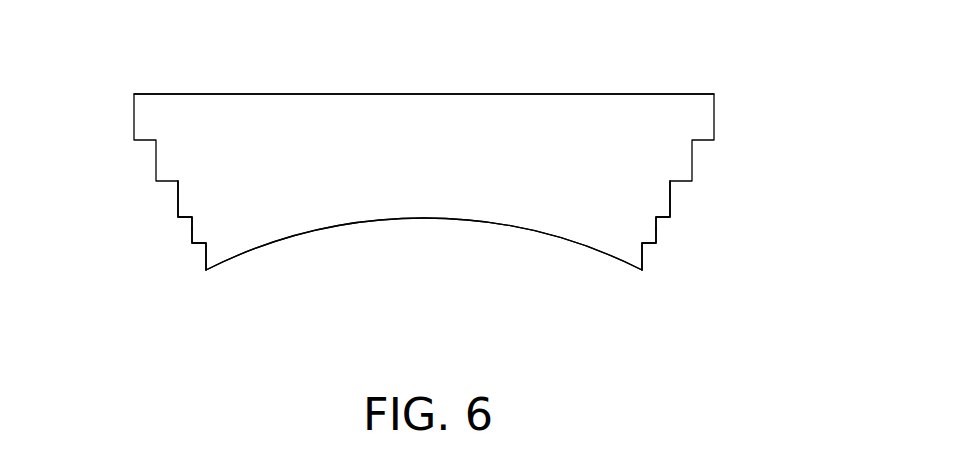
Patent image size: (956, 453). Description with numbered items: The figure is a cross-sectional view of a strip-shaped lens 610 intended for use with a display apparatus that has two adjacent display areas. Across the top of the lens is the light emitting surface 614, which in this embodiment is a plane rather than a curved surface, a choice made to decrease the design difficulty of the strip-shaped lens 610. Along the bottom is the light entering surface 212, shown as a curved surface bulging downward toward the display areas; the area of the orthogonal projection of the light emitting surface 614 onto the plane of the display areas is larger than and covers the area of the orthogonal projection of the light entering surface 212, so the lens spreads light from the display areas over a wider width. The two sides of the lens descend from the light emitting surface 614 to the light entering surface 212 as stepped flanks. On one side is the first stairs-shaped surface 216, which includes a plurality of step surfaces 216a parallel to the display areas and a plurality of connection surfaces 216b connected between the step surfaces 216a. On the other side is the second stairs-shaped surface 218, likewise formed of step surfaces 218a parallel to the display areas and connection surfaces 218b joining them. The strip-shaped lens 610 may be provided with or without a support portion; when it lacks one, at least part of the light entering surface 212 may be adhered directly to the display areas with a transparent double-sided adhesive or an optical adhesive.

The strip-shaped lens 610 is at (765, 167).
The light emitting surface 614 is at (531, 92).
The light entering surface 212 is at (476, 246).
The first stairs-shaped surface 216 is at (90, 204).
The step surfaces 216a is at (206, 254).
The connection surfaces 216b is at (189, 218).
The second stairs-shaped surface 218 is at (757, 204).
The step surfaces 218a is at (642, 254).
The connection surfaces 218b is at (659, 218).